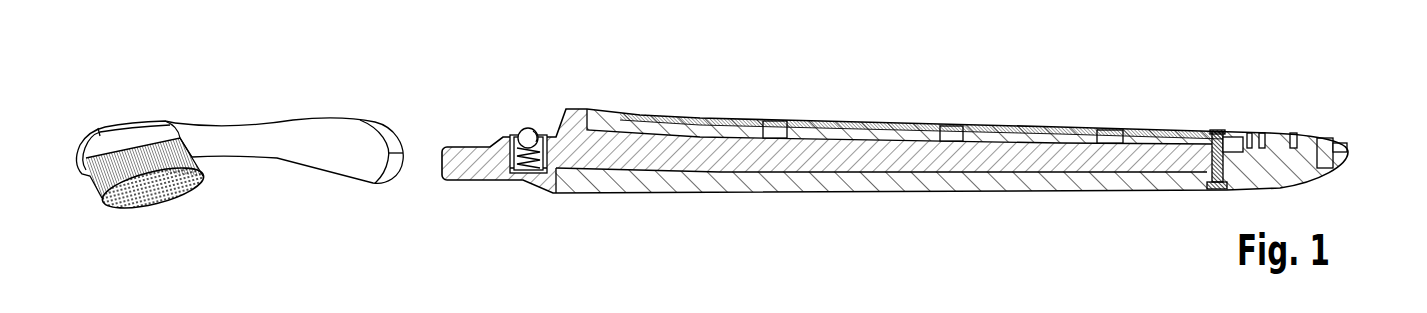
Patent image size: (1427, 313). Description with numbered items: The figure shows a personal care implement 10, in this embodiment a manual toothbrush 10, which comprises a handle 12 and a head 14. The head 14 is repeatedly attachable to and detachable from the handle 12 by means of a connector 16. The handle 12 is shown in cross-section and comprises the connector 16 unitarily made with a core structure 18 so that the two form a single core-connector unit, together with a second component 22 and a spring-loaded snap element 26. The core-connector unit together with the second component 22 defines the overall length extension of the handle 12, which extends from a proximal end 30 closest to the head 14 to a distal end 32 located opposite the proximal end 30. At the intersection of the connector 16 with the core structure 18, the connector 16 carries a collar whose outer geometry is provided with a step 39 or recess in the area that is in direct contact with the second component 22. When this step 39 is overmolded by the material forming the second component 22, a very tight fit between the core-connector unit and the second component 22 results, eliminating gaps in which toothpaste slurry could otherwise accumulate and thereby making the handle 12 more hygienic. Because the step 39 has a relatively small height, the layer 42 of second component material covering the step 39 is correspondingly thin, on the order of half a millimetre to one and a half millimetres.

The personal care implement 10 is at (829, 96).
The handle 12 is at (1129, 118).
The head 14 is at (243, 118).
The connector 16 is at (476, 139).
The core structure 18 is at (993, 168).
The second component 22 is at (827, 188).
The spring-loaded snap element 26 is at (543, 140).
The proximal end 30 is at (436, 169).
The distal end 32 is at (1349, 141).
The step 39 is at (591, 106).
The layer 42 is at (563, 110).